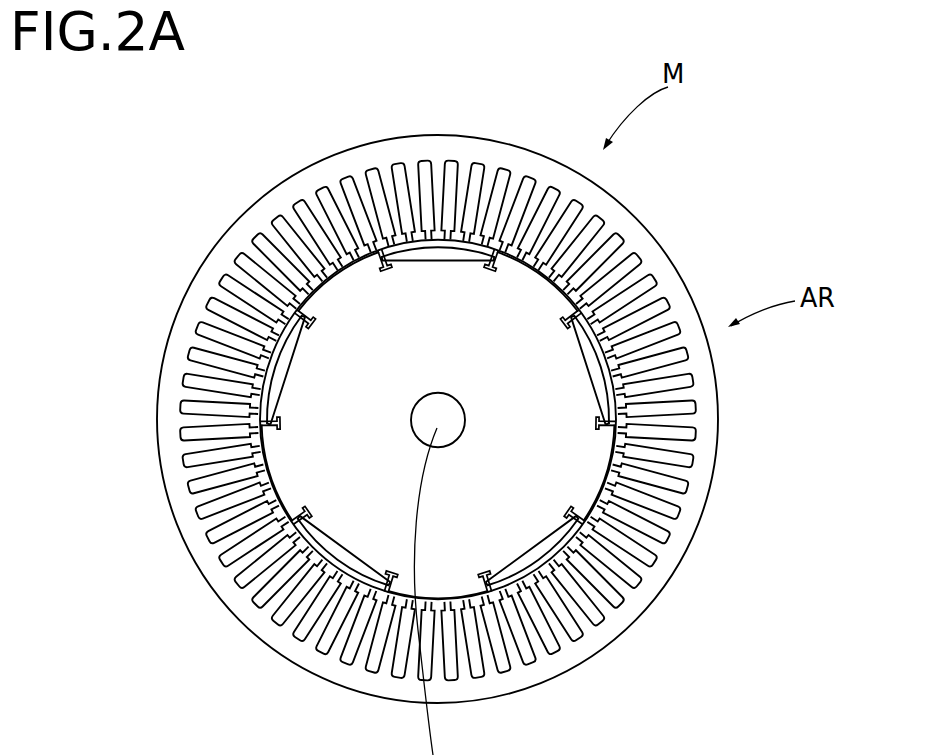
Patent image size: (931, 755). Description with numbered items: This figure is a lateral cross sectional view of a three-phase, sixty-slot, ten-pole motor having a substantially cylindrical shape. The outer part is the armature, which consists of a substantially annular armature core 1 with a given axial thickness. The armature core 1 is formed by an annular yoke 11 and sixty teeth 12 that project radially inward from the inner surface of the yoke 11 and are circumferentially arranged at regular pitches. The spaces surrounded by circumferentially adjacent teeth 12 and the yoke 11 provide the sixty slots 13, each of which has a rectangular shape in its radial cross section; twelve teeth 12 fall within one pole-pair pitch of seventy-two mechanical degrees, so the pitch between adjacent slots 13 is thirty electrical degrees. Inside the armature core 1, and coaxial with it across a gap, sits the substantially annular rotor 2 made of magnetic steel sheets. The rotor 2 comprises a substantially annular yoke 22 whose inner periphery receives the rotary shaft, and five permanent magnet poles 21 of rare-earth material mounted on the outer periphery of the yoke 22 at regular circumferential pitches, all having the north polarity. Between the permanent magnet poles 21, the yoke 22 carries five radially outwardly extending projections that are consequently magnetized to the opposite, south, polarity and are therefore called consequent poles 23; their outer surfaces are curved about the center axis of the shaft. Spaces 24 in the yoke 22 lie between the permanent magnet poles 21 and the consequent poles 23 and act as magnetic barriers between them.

The armature core 1 is at (443, 134).
The yoke 11 is at (313, 188).
The teeth 12 is at (578, 230).
The slot 13 is at (582, 240).
The rotor 2 is at (325, 395).
The permanent magnet poles 21 is at (323, 541).
The yoke 22 is at (283, 470).
The consequent poles 23 is at (450, 585).
The spaces 24 is at (576, 515).